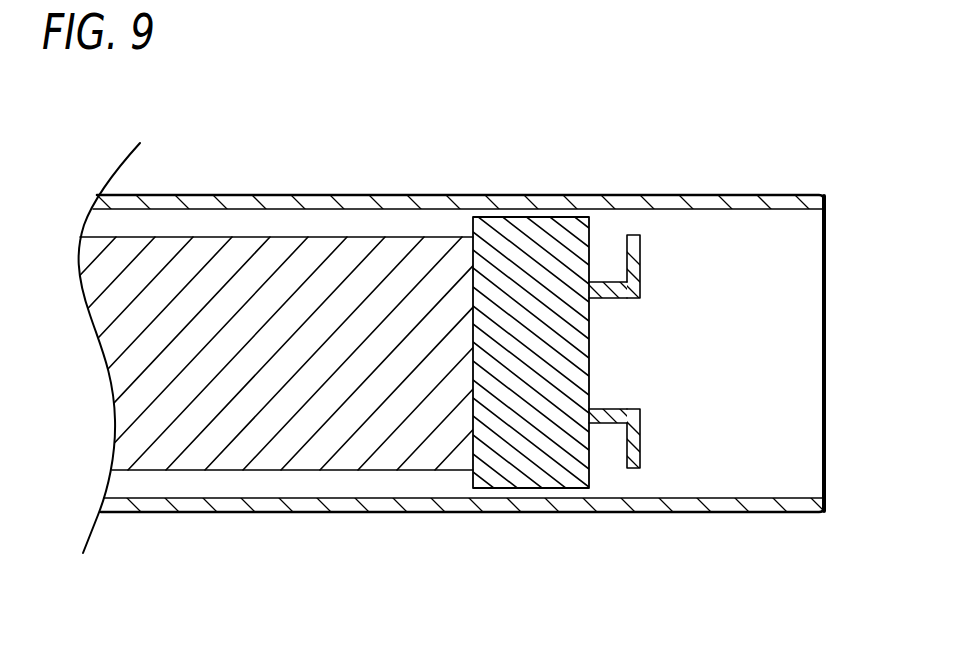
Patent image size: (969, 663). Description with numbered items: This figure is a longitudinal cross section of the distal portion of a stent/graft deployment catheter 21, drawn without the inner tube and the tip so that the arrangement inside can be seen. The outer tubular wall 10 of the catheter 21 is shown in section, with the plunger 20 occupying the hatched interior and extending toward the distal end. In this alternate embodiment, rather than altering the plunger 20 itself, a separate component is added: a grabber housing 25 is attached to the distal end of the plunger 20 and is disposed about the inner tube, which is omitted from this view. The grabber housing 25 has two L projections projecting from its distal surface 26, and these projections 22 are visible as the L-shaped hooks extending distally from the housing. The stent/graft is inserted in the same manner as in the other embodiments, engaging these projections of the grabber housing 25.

The tubular housing 10 is at (730, 496).
The plunger 20 is at (263, 471).
The catheter 21 is at (222, 166).
The contact tip 22 is at (640, 265).
The grabber housing 25 is at (534, 217).
The distal surface 26 is at (590, 248).